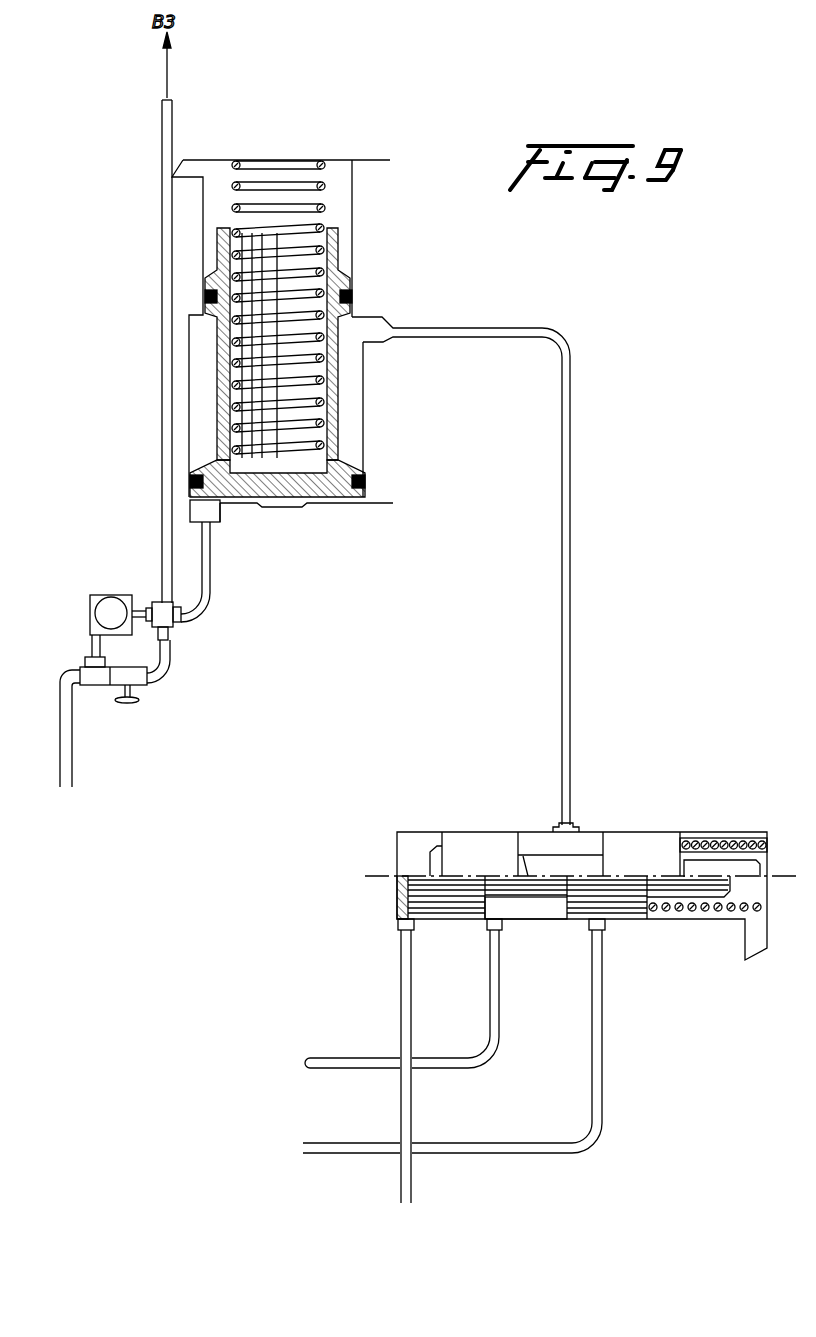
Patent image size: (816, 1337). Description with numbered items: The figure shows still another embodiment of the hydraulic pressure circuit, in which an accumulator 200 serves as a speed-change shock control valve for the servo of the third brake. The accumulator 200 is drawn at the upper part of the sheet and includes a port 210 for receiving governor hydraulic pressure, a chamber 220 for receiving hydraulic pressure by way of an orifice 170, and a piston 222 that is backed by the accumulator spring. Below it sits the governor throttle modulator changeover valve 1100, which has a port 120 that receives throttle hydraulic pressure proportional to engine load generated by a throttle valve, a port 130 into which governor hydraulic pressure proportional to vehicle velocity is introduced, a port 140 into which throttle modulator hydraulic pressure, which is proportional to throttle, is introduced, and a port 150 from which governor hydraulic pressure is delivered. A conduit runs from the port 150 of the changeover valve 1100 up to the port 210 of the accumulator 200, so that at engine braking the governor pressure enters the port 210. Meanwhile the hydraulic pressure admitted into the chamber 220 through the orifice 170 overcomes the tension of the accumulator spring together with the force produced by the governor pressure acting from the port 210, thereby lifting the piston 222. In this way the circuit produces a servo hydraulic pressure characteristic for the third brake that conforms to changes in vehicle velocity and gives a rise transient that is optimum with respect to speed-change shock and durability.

The accumulator 200 is at (290, 130).
The port 210 is at (367, 327).
The piston 222 is at (340, 403).
The chamber 220 is at (327, 503).
The orifice 170 is at (208, 595).
The port 150 is at (560, 826).
The governor throttle modulator changeover valve 1100 is at (618, 798).
The port 120 is at (397, 931).
The port 130 is at (501, 928).
The port 140 is at (602, 928).